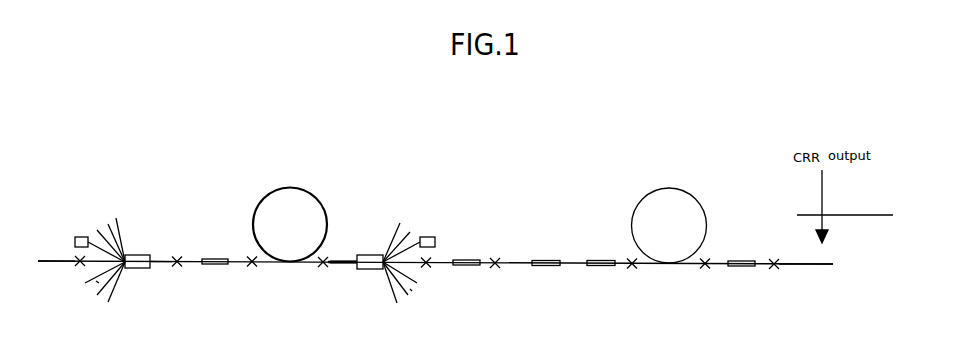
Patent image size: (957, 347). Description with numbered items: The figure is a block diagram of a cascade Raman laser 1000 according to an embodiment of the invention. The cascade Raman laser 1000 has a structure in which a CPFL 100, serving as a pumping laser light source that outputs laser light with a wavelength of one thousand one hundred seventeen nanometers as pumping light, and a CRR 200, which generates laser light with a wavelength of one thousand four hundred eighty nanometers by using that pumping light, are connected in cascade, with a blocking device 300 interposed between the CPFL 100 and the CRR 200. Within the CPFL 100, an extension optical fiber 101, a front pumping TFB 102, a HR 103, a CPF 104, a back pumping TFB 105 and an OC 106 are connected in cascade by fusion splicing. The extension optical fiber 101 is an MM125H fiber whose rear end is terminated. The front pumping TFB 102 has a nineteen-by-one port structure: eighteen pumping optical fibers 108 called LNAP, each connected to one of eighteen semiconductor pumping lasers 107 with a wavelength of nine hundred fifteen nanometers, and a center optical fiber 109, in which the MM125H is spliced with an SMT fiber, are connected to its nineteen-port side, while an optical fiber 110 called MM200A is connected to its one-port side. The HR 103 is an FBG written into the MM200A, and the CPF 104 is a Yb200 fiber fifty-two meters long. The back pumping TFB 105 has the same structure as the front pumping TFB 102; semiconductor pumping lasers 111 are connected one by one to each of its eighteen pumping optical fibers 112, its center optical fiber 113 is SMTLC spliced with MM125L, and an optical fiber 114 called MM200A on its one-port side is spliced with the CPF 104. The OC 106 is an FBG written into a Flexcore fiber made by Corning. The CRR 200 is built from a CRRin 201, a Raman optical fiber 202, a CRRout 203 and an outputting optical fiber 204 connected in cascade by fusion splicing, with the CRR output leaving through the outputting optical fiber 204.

The cascade Raman laser 1000 is at (541, 114).
The CPFL 100 is at (359, 165).
The extension optical fiber 101 is at (45, 264).
The front pumping TFB 102 is at (135, 255).
The HR 103 is at (218, 266).
The CPF 104 is at (314, 205).
The back pumping TFB 105 is at (370, 255).
The OC 106 is at (460, 267).
The semiconductor pumping lasers 107 is at (80, 237).
The pumping optical fibers 108 is at (110, 229).
The center optical fiber 109 is at (90, 280).
The optical fiber 110 is at (153, 266).
The semiconductor pumping lasers 111 is at (427, 237).
The pumping optical fibers 112 is at (395, 235).
The center optical fiber 113 is at (415, 275).
The optical fiber 114 is at (345, 266).
The CRR 200 is at (691, 165).
The CRRin 201 is at (599, 267).
The Raman optical fiber 202 is at (693, 201).
The CRRout 203 is at (741, 267).
The outputting optical fiber 204 is at (801, 267).
The blocking device 300 is at (543, 267).